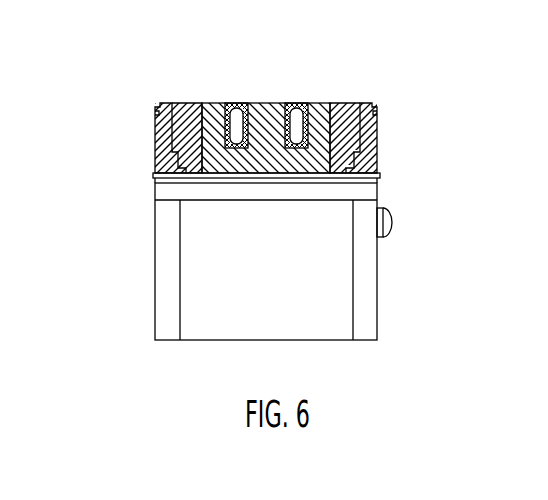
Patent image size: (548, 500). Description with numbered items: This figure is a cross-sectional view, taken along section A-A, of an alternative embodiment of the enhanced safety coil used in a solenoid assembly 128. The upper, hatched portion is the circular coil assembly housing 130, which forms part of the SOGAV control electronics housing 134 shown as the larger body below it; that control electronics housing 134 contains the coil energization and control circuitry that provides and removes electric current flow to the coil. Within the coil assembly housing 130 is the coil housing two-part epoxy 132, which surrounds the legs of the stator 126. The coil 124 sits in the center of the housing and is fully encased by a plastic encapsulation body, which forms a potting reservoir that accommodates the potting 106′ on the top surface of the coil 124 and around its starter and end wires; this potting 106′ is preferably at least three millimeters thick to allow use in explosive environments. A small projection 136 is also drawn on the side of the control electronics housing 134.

The potting 106′ is at (238, 103).
The coil 124 is at (269, 105).
The stator 126 is at (212, 107).
The solenoid assembly 128 is at (90, 240).
The coil assembly housing 130 is at (367, 140).
The coil housing two-part epoxy 132 is at (344, 100).
The SOGAV control electronics housing 134 is at (371, 300).
The button 136 is at (392, 222).